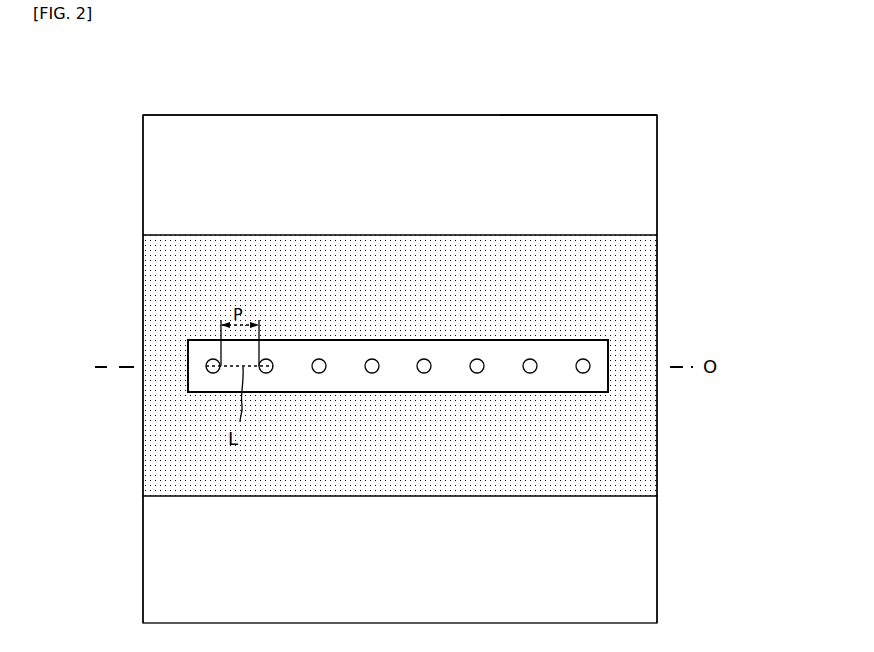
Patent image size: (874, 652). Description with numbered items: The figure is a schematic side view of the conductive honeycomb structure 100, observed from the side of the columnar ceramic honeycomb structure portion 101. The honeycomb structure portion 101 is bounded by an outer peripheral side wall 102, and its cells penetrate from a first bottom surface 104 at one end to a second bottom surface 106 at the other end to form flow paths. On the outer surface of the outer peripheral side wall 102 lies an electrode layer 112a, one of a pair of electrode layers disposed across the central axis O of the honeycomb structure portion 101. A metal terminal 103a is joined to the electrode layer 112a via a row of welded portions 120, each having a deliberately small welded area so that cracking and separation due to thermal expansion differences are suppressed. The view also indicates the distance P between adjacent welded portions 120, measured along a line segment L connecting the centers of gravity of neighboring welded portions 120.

The honeycomb structure 100 is at (122, 95).
The honeycomb structure portion 101 is at (387, 112).
The outer peripheral side wall 102 is at (508, 115).
The first bottom surface 104 is at (143, 190).
The second bottom surface 106 is at (657, 184).
The electrode layer 112a is at (652, 312).
The metal terminal 103a is at (418, 393).
The welded portion 120 is at (319, 373).